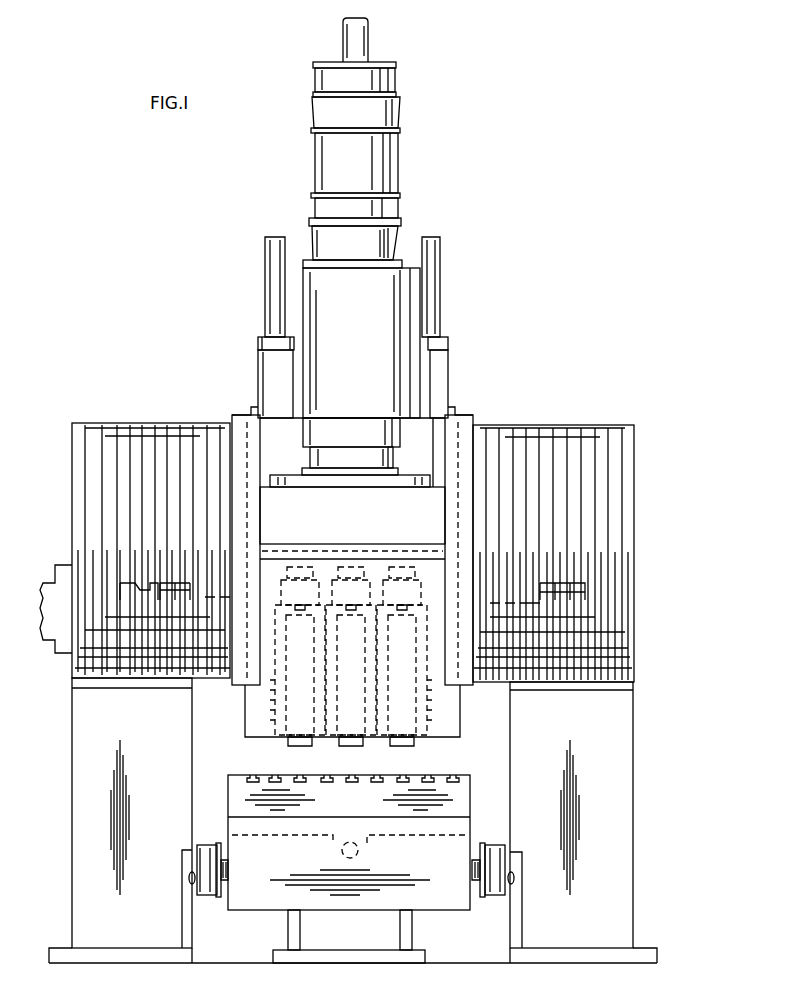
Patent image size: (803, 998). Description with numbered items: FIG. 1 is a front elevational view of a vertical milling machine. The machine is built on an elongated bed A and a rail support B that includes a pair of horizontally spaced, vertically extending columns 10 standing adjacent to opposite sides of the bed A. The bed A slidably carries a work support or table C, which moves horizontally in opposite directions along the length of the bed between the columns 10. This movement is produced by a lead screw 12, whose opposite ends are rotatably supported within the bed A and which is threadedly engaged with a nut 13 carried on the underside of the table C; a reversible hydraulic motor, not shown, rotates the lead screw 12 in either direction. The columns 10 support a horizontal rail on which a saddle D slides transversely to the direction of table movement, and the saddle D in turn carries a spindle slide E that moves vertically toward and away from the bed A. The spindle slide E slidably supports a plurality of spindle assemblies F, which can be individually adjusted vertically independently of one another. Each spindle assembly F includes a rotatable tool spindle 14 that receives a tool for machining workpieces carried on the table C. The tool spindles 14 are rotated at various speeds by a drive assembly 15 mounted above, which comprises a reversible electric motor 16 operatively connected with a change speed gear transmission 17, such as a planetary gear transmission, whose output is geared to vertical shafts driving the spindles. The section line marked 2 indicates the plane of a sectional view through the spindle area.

The section line 2- 2 is at (301, 522).
The columns 10 is at (82, 771).
The lead screw 12 is at (330, 850).
The nut 13 is at (365, 850).
The tool spindle 14 is at (318, 745).
The drive assembly 15 is at (413, 214).
The reversible electric motor 16 is at (322, 157).
The change speed gear transmission 17 is at (415, 290).
The bed A is at (434, 906).
The rail support B is at (640, 851).
The table C is at (349, 842).
The saddle D is at (466, 412).
The spindle slide E is at (352, 523).
The spindle assemblies F is at (390, 562).